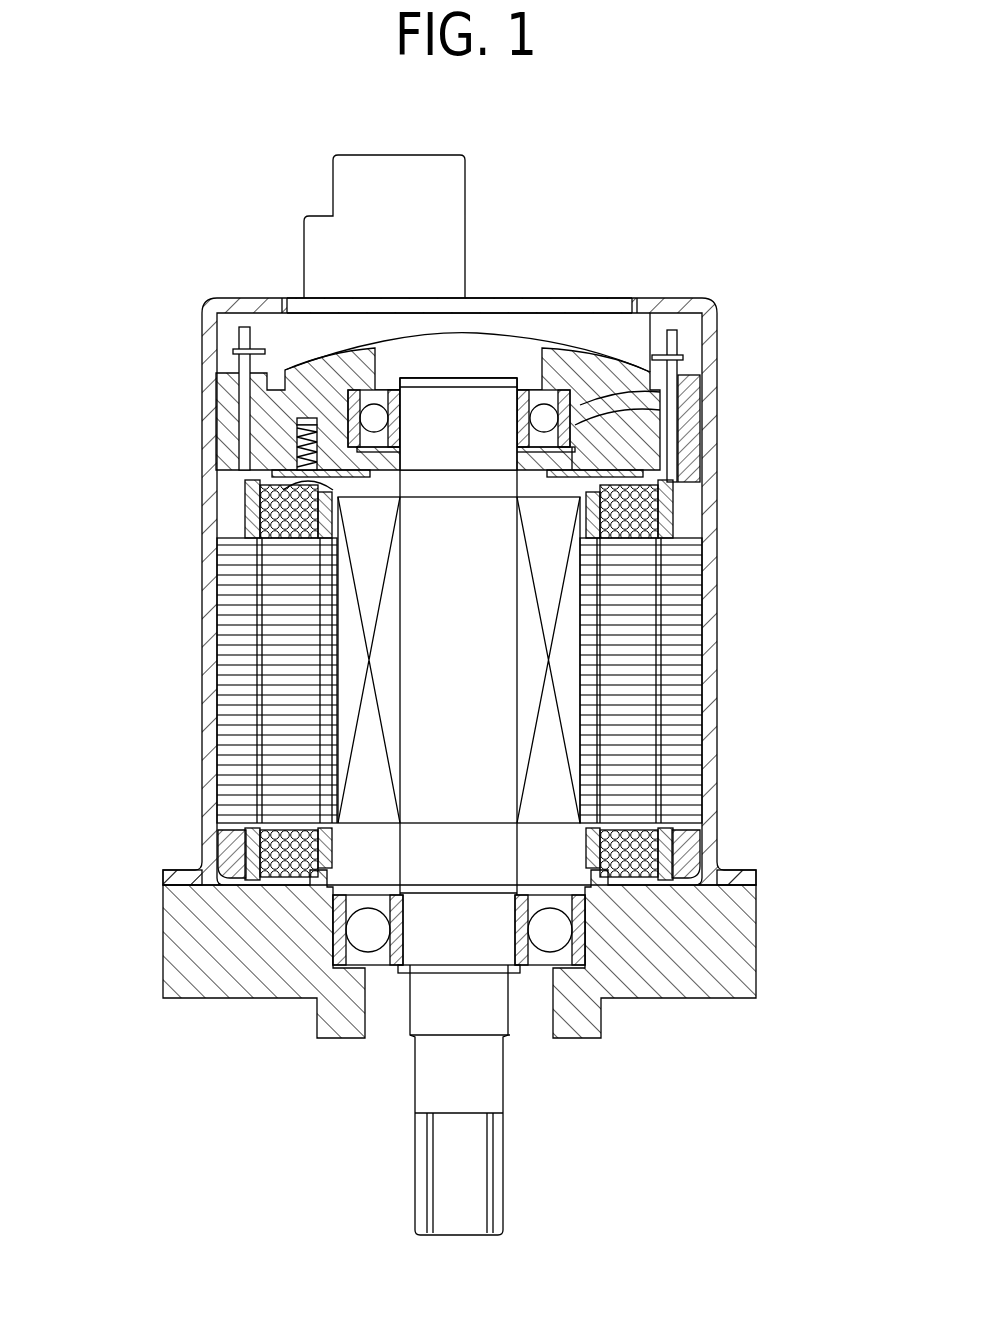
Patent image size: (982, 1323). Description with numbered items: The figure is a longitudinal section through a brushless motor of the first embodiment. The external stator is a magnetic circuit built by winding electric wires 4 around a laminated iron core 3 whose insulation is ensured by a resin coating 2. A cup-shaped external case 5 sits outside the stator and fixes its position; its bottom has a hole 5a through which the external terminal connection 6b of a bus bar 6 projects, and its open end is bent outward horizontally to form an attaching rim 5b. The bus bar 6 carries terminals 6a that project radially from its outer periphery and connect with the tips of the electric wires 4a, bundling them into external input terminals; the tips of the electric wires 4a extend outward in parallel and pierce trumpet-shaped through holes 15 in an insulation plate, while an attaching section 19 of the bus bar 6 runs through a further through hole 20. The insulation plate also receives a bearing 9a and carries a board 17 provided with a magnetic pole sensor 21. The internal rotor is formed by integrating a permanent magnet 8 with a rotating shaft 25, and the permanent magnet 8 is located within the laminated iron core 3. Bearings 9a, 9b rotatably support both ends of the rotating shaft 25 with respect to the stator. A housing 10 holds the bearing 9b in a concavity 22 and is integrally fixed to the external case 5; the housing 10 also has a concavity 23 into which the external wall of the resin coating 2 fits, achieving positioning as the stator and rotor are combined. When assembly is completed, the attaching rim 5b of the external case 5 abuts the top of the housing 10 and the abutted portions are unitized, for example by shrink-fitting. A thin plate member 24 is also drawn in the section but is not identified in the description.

The resin coating 2 is at (667, 512).
The laminated iron core 3 is at (228, 672).
The electric wires 4 is at (237, 517).
The tips of the electric wires 4a is at (238, 338).
The external case 5 is at (715, 600).
The hole 5a is at (633, 303).
The attaching rim 5b is at (737, 868).
The bus bar 6 is at (618, 330).
The terminals 6a is at (235, 353).
The external terminal connection 6b is at (458, 217).
The permanent magnet 8 is at (563, 647).
The bearing 9a is at (572, 411).
The bearing 9b is at (578, 948).
The housing 10 is at (743, 943).
The through holes 15 is at (672, 393).
The board 17 is at (640, 458).
The attaching section 19 is at (285, 436).
The through hole 20 is at (313, 397).
The magnetic pole sensor 21 is at (330, 565).
The concavity 22 is at (340, 953).
The concavity 23 is at (670, 850).
The plate 24 is at (282, 460).
The rotating shaft 25 is at (490, 708).